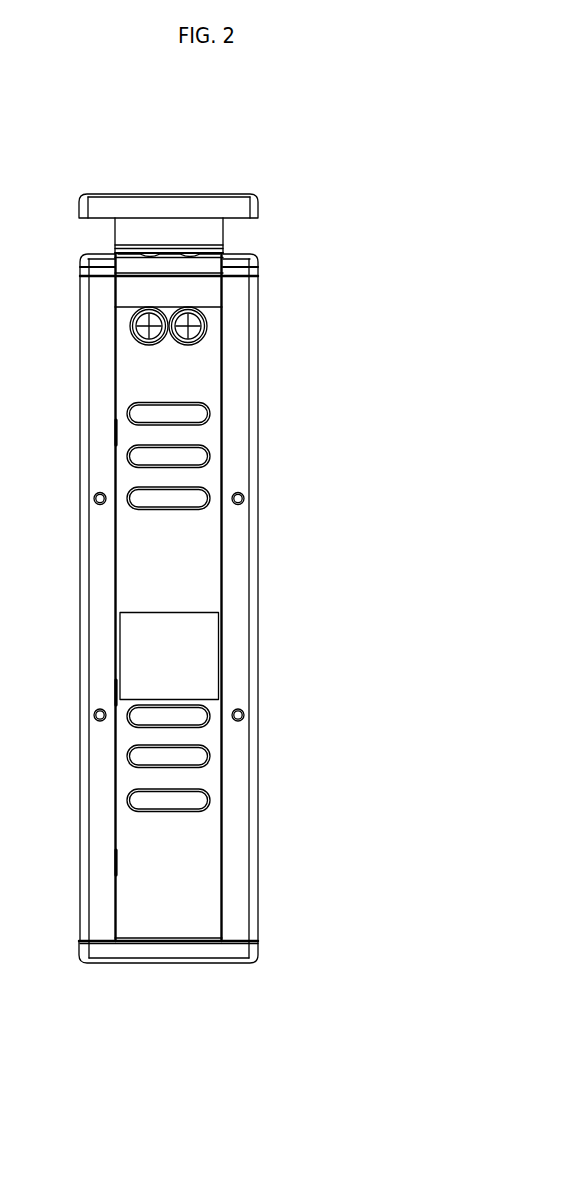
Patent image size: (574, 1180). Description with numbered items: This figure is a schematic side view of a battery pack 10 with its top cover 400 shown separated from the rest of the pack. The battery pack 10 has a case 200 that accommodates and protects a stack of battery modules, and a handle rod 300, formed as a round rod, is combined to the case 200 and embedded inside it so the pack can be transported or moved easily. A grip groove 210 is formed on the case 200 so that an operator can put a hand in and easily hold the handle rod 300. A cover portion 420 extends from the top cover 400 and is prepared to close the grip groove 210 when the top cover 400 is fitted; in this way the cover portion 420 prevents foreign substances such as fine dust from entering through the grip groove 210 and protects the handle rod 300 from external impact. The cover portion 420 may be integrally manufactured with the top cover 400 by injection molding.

The battery pack 10 is at (299, 132).
The top cover 400 is at (102, 170).
The cover portion 420 is at (215, 233).
The handle rod 300 is at (207, 272).
The case 200 is at (273, 375).
The grip groove 210 is at (203, 290).